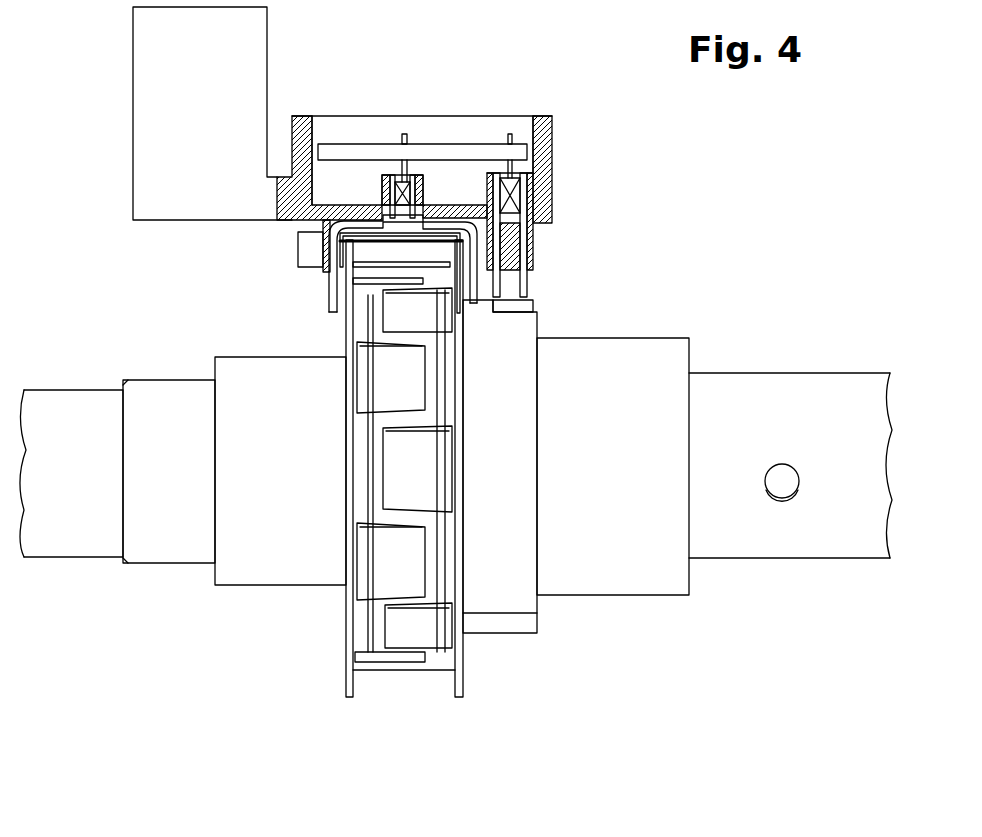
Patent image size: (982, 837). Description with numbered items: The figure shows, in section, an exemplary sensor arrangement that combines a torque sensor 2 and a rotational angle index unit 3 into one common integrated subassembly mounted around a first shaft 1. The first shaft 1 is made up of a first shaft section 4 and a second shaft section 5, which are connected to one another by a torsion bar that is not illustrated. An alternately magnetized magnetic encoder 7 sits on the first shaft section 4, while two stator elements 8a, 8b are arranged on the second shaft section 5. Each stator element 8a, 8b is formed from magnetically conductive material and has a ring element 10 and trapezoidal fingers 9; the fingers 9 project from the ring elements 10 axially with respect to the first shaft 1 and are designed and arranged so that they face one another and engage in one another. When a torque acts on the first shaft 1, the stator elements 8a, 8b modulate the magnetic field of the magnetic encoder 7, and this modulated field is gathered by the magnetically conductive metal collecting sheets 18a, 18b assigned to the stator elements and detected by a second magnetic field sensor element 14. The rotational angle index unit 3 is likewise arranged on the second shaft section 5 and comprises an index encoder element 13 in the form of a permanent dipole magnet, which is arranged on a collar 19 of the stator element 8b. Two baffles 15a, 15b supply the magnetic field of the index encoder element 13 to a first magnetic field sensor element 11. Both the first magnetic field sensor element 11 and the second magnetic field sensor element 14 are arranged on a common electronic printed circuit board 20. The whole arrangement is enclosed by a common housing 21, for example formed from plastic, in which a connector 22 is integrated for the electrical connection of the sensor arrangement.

The first shaft 1 is at (803, 367).
The torque sensor 2 is at (398, 708).
The rotational angle index unit 3 is at (580, 151).
The first shaft section 4 is at (160, 545).
The second shaft section 5 is at (772, 535).
The magnetic encoder 7 is at (500, 612).
The stator element 8a is at (383, 545).
The stator element 8b is at (430, 490).
The trapezoidal fingers 9 is at (375, 353).
The ring element 10 is at (350, 682).
The first magnetic field sensor element 11 is at (497, 198).
The index encoder element 13 is at (518, 307).
The second magnetic field sensor element 14 is at (430, 193).
The baffle 15a is at (483, 196).
The baffle 15b is at (523, 204).
The metal collecting sheet 18a is at (333, 255).
The metal collecting sheet 18b is at (474, 256).
The collar 19 is at (520, 332).
The electronic printed circuit board 20 is at (382, 148).
The housing 21 is at (340, 128).
The connector 22 is at (155, 65).